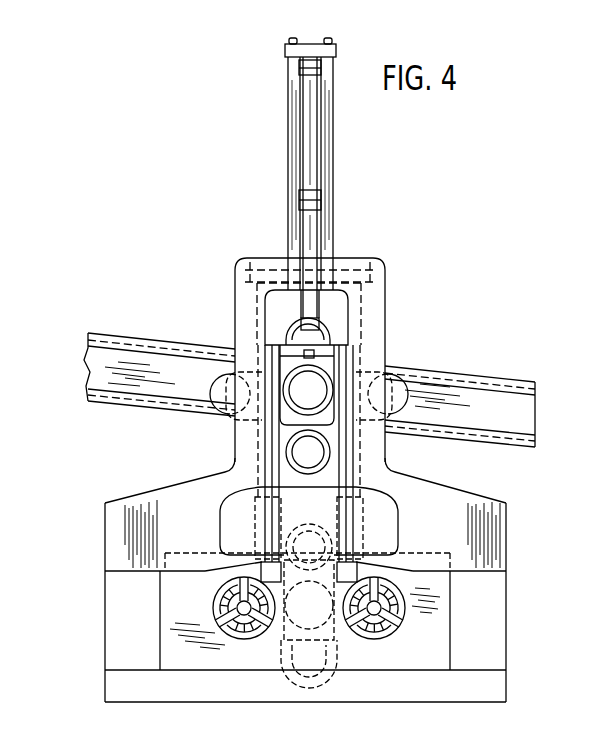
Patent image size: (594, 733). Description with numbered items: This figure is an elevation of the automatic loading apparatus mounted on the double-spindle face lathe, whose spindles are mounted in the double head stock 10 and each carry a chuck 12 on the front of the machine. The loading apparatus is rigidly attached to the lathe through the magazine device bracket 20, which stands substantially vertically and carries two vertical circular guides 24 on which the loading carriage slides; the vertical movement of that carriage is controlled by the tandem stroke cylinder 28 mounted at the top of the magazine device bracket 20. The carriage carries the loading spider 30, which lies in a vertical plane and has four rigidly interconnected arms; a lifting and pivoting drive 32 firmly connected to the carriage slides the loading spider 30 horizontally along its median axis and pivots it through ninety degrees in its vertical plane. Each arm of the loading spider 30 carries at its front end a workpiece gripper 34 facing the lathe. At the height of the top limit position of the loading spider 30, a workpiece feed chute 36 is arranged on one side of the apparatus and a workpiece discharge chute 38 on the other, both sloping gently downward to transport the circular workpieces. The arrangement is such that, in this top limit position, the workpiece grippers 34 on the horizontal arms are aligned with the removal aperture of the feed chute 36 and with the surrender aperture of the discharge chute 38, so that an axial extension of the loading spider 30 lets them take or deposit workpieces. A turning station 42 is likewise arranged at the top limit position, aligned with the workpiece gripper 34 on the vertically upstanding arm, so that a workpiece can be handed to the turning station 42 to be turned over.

The double head stock 10 is at (173, 622).
The chuck 12 is at (245, 640).
The magazine device bracket 20 is at (135, 532).
The vertical circular guides 24 is at (266, 512).
The tandem stroke cylinder 28 is at (308, 95).
The loading spider 30 is at (326, 438).
The lifting and pivoting drive 32 is at (303, 387).
The workpiece gripper 34 is at (282, 305).
The workpiece feed chute 36 is at (115, 354).
The workpiece discharge chute 38 is at (460, 388).
The turning station 42 is at (293, 327).